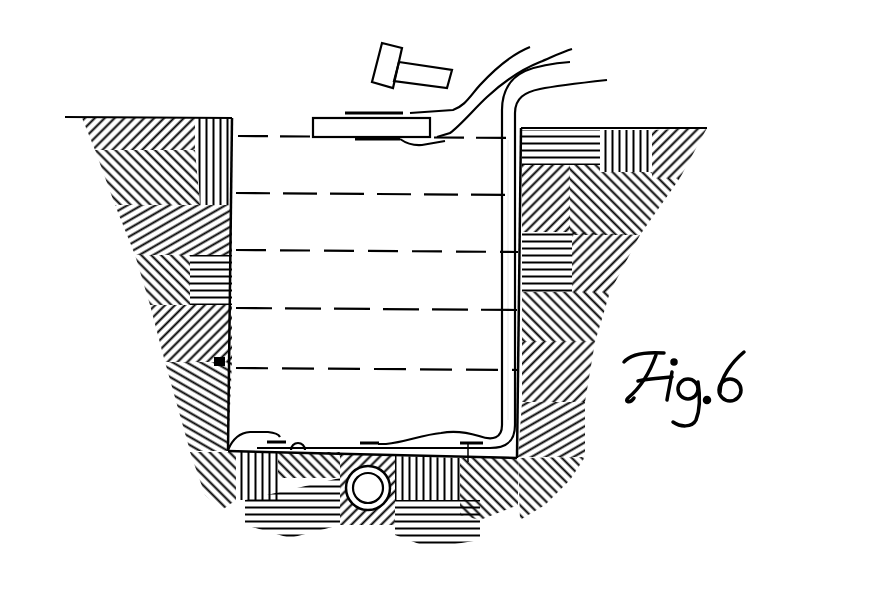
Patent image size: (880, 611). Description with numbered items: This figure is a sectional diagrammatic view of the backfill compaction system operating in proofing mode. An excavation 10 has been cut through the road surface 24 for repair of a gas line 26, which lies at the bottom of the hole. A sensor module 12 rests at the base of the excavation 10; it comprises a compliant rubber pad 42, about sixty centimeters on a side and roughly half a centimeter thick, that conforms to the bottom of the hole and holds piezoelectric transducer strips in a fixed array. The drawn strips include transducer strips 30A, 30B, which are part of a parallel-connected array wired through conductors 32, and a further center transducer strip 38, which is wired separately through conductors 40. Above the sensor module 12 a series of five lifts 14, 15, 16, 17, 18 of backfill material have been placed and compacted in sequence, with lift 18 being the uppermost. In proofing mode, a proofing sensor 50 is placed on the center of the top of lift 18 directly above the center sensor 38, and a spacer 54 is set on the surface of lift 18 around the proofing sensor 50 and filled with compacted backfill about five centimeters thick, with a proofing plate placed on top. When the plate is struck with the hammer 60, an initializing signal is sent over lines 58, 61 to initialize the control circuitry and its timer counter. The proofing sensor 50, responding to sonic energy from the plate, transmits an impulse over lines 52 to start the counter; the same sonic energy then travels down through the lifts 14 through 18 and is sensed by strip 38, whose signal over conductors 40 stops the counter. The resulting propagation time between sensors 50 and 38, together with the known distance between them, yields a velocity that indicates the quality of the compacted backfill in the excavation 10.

The excavation 10 is at (216, 363).
The sensor module 12 is at (430, 464).
The lift 14 is at (279, 408).
The lift 15 is at (284, 349).
The lift 16 is at (284, 290).
The lift 17 is at (284, 235).
The lift 18 is at (286, 178).
The road surface 24 is at (127, 117).
The gas line 26 is at (343, 497).
The piezoelectric transducer strip 30A is at (468, 468).
The piezoelectric transducer strip 30B is at (212, 458).
The conductors 32 is at (545, 105).
The piezoelectric transducer strip 38 is at (362, 441).
The conductors 40 is at (447, 255).
The compliant rubber pad 42 is at (293, 452).
The proofing sensor 50 is at (358, 141).
The lines 52 is at (567, 55).
The spacer 54 is at (310, 127).
The lines 58 is at (501, 74).
The hammer 60 is at (418, 64).
The lines 61 is at (517, 55).